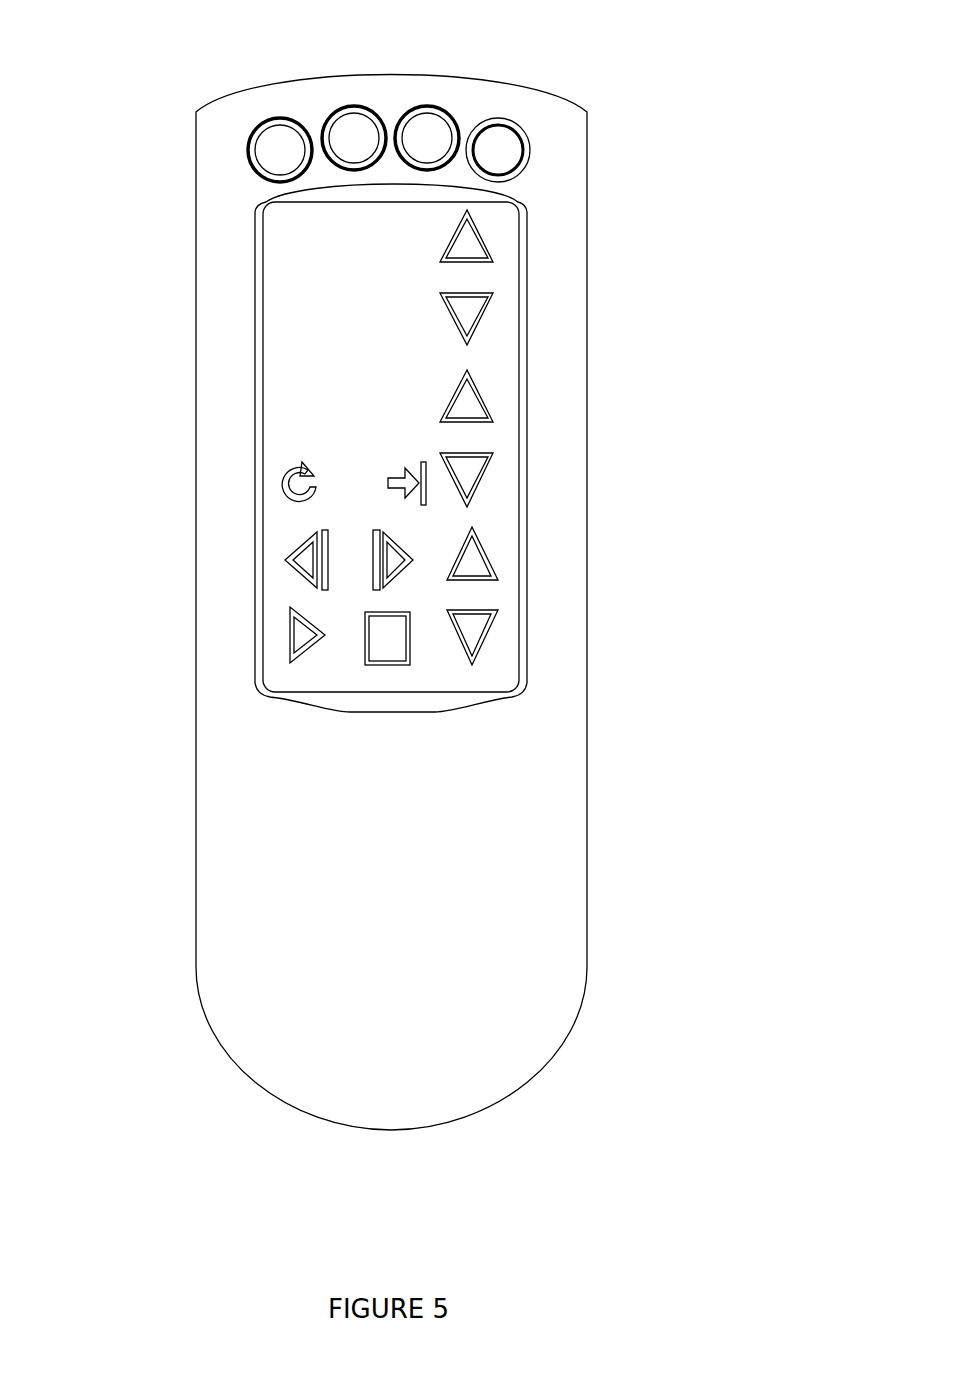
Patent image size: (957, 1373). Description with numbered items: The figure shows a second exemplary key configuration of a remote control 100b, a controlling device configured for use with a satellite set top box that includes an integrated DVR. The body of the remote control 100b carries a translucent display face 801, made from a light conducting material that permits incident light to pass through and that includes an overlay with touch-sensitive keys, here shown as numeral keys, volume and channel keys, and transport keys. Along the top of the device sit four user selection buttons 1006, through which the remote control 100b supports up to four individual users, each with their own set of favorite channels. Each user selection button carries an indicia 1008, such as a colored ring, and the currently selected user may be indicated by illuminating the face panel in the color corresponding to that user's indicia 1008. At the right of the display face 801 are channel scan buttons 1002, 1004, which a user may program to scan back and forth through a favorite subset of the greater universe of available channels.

The remote control 100b is at (791, 1008).
The translucent display face 801 is at (176, 208).
The user selection buttons 1006 is at (600, 120).
The indicia 1008 is at (287, 120).
The channel scan button 1002 is at (495, 553).
The channel scan button 1004 is at (492, 632).